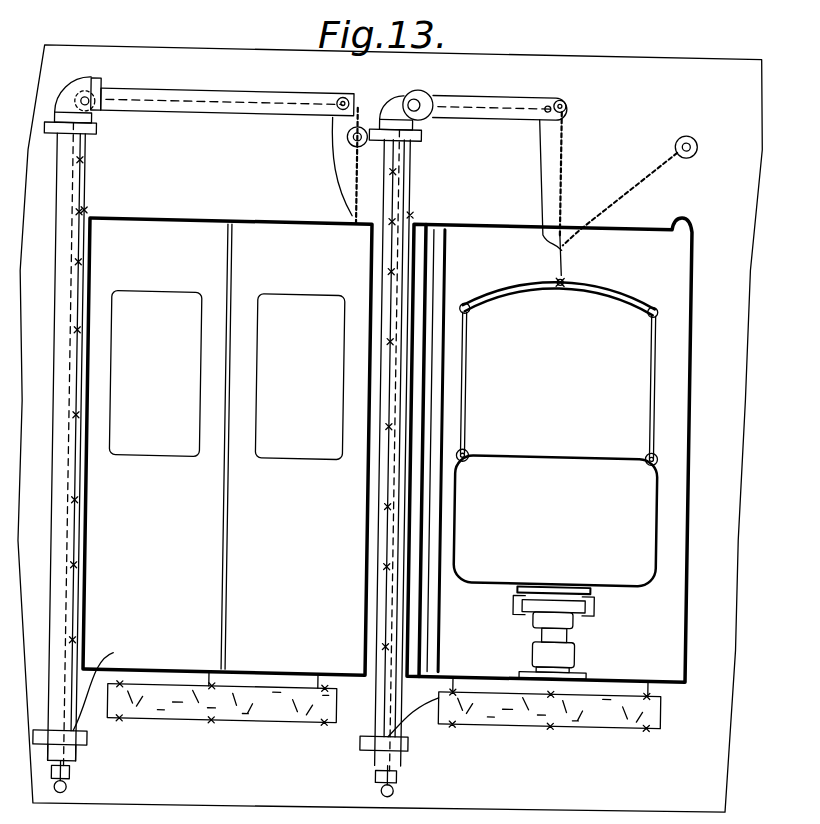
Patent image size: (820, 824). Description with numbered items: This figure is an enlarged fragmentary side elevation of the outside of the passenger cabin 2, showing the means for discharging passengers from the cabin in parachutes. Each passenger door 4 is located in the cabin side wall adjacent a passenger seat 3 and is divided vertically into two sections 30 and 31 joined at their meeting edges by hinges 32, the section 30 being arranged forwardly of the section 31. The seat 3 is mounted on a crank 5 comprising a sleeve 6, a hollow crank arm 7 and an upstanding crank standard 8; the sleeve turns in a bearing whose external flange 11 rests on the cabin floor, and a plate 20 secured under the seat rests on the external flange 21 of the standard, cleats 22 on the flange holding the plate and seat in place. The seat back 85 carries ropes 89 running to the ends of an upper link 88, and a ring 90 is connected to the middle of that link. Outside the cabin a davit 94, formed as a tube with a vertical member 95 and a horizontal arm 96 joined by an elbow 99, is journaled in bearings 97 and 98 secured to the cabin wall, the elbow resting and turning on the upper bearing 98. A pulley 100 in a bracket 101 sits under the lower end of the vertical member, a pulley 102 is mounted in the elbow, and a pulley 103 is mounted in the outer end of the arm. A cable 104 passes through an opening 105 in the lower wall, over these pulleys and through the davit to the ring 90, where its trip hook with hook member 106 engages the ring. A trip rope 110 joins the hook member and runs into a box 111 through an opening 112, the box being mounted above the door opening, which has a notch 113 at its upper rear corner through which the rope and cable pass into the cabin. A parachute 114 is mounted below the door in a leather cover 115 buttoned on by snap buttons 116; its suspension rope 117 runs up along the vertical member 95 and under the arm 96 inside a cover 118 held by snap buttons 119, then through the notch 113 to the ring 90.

The passenger cabin 2 is at (662, 56).
The passenger seat 3 is at (478, 598).
The passenger door 4 is at (222, 216).
The crank 5 is at (543, 625).
The sleeve 6 is at (546, 660).
The hollow crank arm 7 is at (545, 640).
The crank standard 8 is at (573, 628).
The external flange 11 is at (590, 665).
The plate 20 is at (596, 580).
The external flange 21 is at (591, 604).
The cleats 22 is at (519, 596).
The door section 30 is at (460, 238).
The door section 31 is at (466, 268).
The hinges 32 is at (228, 246).
The seat back 85 is at (560, 460).
The link 88 is at (612, 290).
The ropes 89 is at (469, 371).
The ring 90 is at (566, 268).
The davit 94 is at (259, 115).
The vertical member 95 is at (58, 382).
The horizontal arm 96 is at (221, 88).
The bearing 97 is at (96, 738).
The bearing 98 is at (95, 128).
The elbow 99 is at (80, 97).
The pulley 100 is at (66, 790).
The bracket 101 is at (60, 774).
The pulley 102 is at (94, 80).
The pulley 103 is at (341, 92).
The cable 104 is at (70, 192).
The opening 105 is at (565, 230).
The hook member 106 is at (390, 785).
The rope 110 is at (408, 160).
The box 111 is at (348, 136).
The opening 112 is at (359, 124).
The notch 113 is at (360, 209).
The parachute 114 is at (384, 720).
The leather cover 115 is at (184, 712).
The snap buttons 116 is at (84, 210).
The suspension rope 117 is at (333, 175).
The cover 118 is at (81, 524).
The snap buttons 119 is at (253, 110).